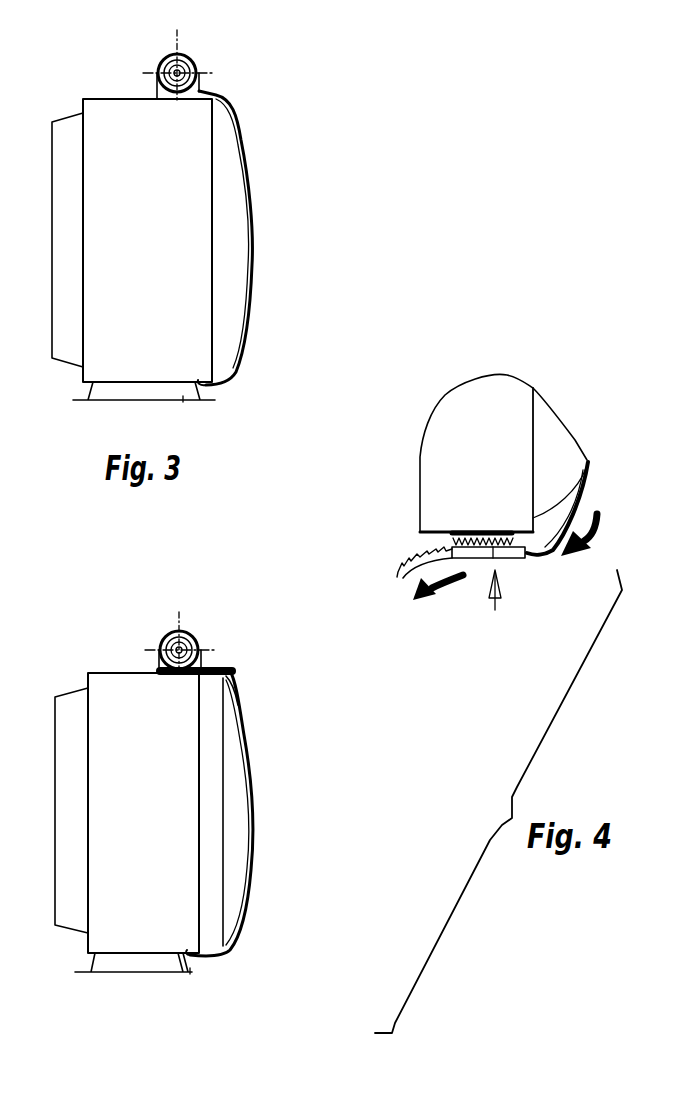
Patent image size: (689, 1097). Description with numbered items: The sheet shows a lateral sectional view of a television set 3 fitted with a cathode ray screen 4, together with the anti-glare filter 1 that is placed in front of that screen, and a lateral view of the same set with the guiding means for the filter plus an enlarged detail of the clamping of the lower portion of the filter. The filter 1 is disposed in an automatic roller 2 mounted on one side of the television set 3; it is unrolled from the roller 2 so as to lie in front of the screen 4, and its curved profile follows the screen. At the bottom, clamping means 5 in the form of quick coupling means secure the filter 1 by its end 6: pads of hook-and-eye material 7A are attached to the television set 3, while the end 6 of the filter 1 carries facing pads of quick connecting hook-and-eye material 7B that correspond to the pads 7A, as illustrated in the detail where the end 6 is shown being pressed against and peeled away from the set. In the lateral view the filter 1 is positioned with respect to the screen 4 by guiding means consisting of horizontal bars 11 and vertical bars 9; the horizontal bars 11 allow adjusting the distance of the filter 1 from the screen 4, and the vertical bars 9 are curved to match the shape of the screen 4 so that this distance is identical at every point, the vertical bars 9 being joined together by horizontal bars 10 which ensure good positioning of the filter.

In FIG. 3, the filter 1 is at (253, 233).
In FIG. 3, the automatic roller 2 is at (195, 65).
In FIG. 4, the automatic roller 2 is at (180, 652).
In FIG. 3, the television set 3 is at (115, 155).
In FIG. 4, the television set 3 is at (107, 700).
In FIG. 3, the cathode ray screen 4 is at (225, 317).
In FIG. 3, the clamping means 5 is at (203, 387).
In FIG. 4, the end of the filter 6 is at (530, 553).
In FIG. 4, the pads of hook-and-eye material 7A is at (458, 532).
In FIG. 4, the pads of quick connecting hook-and-eye material 7B is at (480, 560).
In FIG. 4, the vertical bars 9 is at (237, 725).
In FIG. 4, the horizontal bars 10 is at (235, 678).
In FIG. 4, the horizontal bars 11 is at (214, 668).